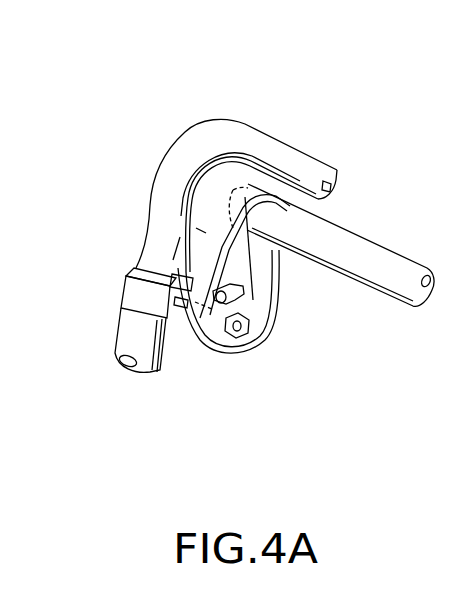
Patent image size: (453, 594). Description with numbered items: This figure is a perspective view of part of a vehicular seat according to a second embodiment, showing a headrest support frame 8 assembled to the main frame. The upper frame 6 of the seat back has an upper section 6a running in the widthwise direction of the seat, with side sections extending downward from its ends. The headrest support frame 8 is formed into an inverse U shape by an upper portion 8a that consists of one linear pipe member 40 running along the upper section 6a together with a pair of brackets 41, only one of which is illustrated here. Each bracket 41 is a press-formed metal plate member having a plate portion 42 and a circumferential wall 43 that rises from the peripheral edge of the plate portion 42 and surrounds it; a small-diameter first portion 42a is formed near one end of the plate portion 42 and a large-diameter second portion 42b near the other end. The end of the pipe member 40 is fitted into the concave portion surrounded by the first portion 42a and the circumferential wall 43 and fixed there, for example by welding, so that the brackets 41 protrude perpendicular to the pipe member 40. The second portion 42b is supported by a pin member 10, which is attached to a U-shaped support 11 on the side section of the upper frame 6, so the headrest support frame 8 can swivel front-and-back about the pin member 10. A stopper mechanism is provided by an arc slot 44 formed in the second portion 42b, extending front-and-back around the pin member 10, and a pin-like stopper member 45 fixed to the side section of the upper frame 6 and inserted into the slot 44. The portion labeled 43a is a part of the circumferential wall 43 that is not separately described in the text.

The upper frame 6 is at (302, 113).
The upper section 6a is at (315, 160).
The headrest support frame 8 is at (308, 292).
The upper portion 8a is at (392, 260).
The pin member 10 is at (124, 269).
The U-shaped support 11 is at (122, 290).
The pipe member 40 is at (308, 275).
The bracket 41 is at (263, 275).
The plate portion 42 is at (280, 351).
The first portion 42a is at (248, 297).
The second portion 42b is at (257, 348).
The circumferential wall 43 is at (234, 256).
The bracket upper portion 43a is at (245, 197).
The arc slot 44 is at (208, 240).
The stopper member 45 is at (170, 272).